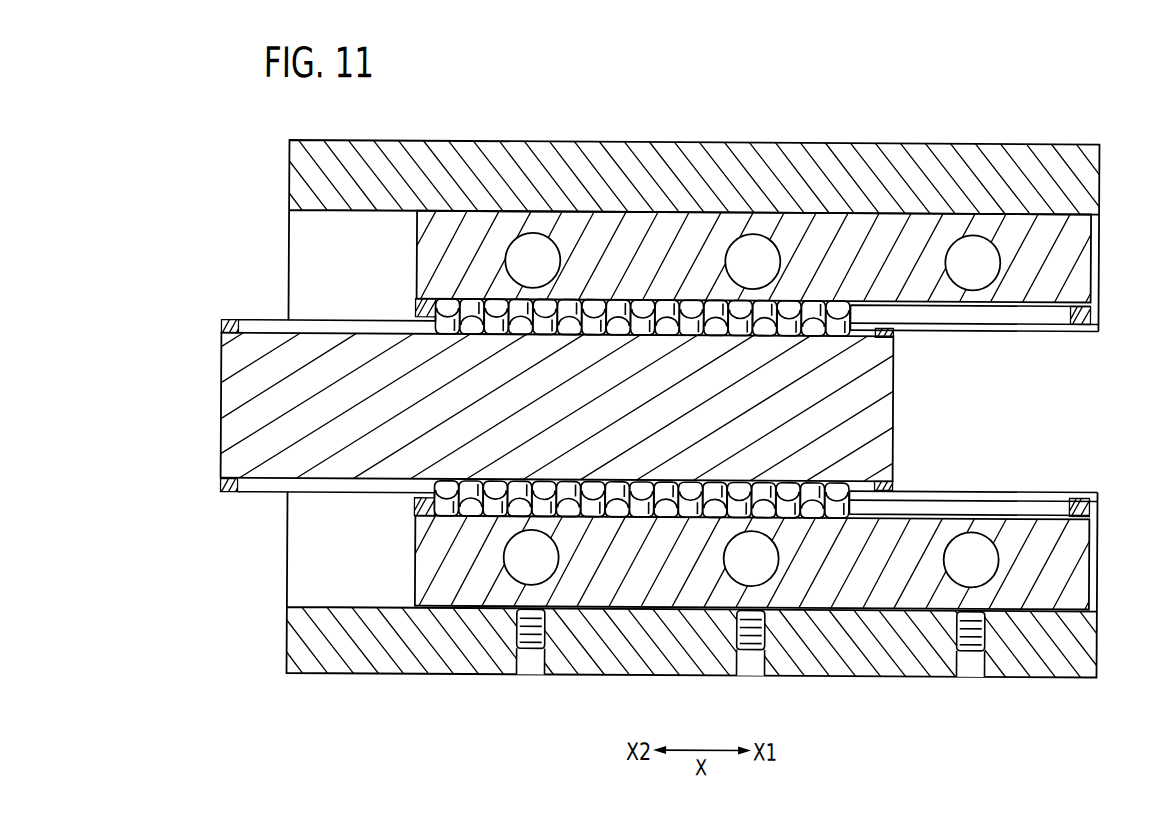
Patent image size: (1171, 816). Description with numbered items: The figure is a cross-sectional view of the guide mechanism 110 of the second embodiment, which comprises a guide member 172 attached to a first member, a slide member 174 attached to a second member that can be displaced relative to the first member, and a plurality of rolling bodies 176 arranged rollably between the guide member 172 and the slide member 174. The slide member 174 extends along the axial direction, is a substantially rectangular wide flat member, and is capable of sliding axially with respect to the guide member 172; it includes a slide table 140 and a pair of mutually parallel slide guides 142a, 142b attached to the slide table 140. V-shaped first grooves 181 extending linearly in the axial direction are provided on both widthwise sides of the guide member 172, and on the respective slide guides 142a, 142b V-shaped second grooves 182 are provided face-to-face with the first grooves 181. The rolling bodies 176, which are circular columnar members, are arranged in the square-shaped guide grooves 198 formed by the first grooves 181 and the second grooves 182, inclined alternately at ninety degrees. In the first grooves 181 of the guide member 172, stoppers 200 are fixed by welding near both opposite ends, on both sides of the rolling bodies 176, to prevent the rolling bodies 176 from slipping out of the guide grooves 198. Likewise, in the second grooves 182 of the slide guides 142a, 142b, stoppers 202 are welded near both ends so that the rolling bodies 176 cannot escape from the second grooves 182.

The guide mechanism 110 is at (452, 78).
The slide table 140 is at (753, 411).
The slide guide 142a is at (470, 225).
The slide guide 142b is at (817, 595).
The guide member 172 is at (332, 315).
The slide member 174 is at (806, 140).
The rolling bodies 176 is at (638, 308).
The first grooves 181 is at (862, 333).
The second grooves 182 is at (948, 312).
The guide grooves 198 is at (667, 409).
The stoppers 200 is at (226, 320).
The stoppers 202 is at (415, 302).